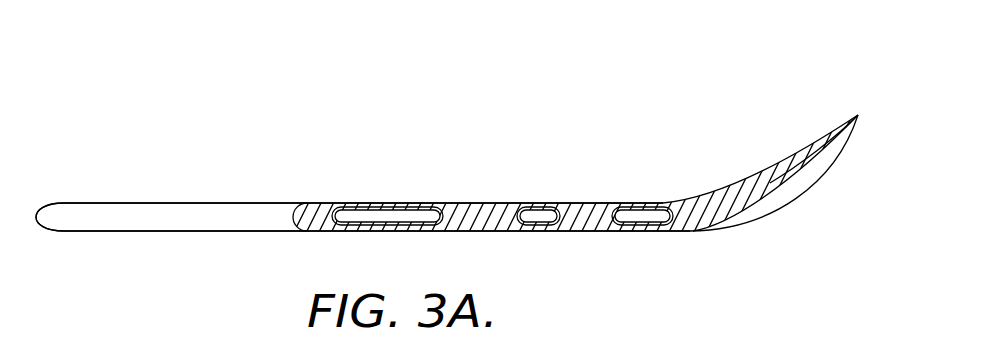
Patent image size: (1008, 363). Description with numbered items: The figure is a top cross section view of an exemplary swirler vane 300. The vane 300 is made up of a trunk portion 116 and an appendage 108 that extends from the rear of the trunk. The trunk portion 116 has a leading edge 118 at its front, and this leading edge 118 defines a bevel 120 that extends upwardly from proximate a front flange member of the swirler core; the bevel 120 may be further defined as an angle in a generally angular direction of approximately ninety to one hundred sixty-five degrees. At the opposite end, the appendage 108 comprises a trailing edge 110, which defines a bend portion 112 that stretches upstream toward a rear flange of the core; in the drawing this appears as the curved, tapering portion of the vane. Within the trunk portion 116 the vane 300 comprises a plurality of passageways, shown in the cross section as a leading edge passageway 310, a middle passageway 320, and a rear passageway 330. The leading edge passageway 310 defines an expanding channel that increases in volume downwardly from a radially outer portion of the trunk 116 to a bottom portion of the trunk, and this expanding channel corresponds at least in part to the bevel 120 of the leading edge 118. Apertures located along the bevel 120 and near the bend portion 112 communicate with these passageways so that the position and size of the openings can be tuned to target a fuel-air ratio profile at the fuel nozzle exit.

The vane 300 is at (821, 93).
The appendage 108 is at (750, 159).
The trailing edge 110 is at (858, 113).
The bend portion 112 is at (737, 203).
The trunk portion 116 is at (248, 222).
The leading edge 118 is at (176, 231).
The bevel 120 is at (86, 222).
The leading edge passageway 310 is at (391, 215).
The middle passageway 320 is at (541, 215).
The rear passageway 330 is at (641, 215).